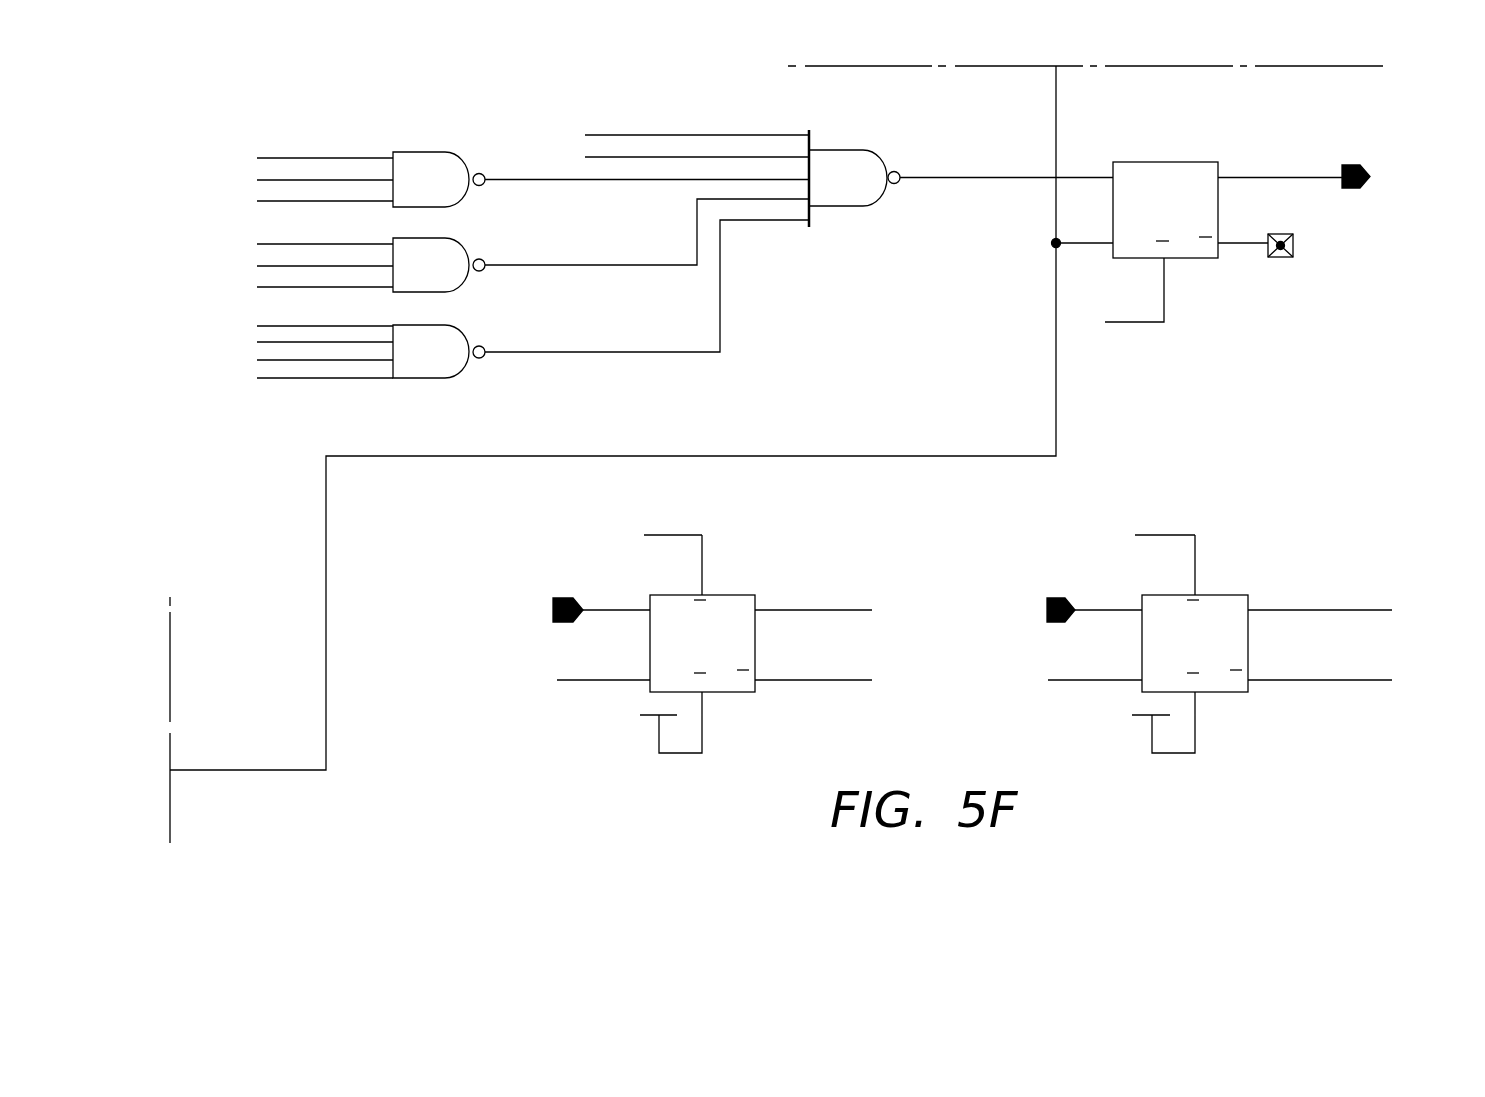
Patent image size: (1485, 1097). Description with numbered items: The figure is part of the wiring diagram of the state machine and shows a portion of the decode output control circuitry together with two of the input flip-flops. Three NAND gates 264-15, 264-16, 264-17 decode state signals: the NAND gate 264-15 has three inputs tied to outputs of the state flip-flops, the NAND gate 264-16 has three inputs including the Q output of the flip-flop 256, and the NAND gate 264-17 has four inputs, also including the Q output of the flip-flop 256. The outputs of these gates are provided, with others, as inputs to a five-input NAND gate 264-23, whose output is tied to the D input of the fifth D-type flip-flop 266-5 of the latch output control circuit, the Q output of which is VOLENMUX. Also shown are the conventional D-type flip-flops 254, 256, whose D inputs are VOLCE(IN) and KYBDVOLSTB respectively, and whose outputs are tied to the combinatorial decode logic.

The NAND gate 264-15 is at (417, 150).
The NAND gate 264-16 is at (437, 238).
The NAND gate 264-17 is at (435, 325).
The five input NAND gate 264-23 is at (849, 169).
The fifth D-type flip flop 266-5 is at (1147, 162).
The flip-flop 254 is at (722, 595).
The flip-flop 256 is at (1210, 595).